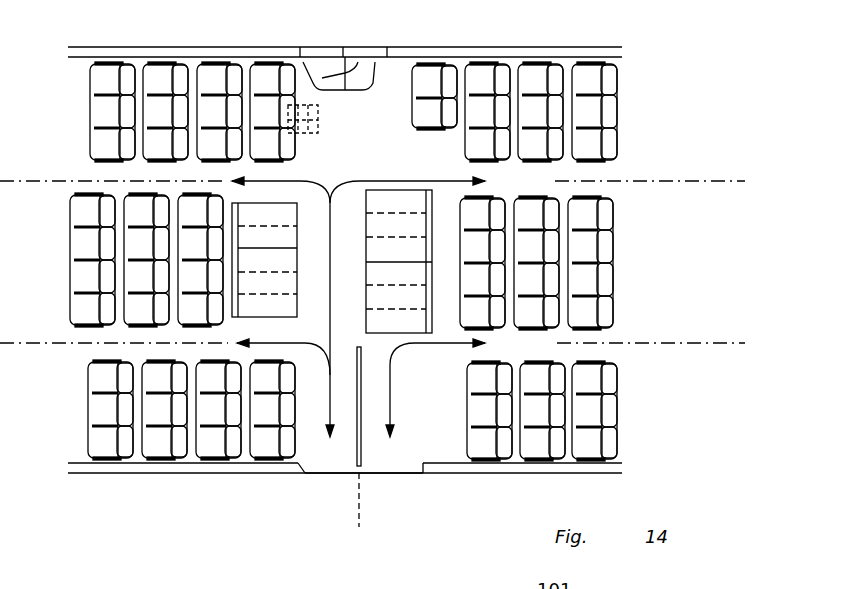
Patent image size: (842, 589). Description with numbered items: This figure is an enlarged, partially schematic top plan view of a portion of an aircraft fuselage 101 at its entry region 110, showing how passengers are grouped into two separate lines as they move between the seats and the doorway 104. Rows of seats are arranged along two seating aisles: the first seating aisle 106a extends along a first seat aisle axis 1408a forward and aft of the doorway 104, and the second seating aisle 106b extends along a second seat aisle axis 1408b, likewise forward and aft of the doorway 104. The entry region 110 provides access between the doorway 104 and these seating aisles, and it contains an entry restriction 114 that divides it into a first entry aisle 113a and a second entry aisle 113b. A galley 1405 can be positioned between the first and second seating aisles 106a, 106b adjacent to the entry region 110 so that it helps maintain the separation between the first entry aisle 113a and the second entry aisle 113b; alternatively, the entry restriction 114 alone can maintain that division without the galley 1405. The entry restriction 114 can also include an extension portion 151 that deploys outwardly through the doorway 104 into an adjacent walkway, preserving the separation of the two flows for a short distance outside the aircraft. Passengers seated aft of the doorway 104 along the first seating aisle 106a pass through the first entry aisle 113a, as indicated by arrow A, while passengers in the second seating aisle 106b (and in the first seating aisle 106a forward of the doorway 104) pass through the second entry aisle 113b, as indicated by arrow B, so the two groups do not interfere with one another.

The fuselage 101 is at (488, 47).
The galley 1405 is at (388, 200).
The second seat aisle axis 1408b is at (675, 181).
The first seat aisle axis 1408a is at (682, 343).
The second seating aisle 106b is at (612, 186).
The first seating aisle 106a is at (612, 349).
The second entry aisle 113b is at (312, 247).
The first entry aisle 113a is at (377, 462).
The entry restriction 114 is at (372, 448).
The extension portion 151 is at (357, 525).
The entry region 110 is at (300, 474).
The doorway 104 is at (342, 488).
The arrow A is at (392, 377).
The arrow B is at (332, 273).